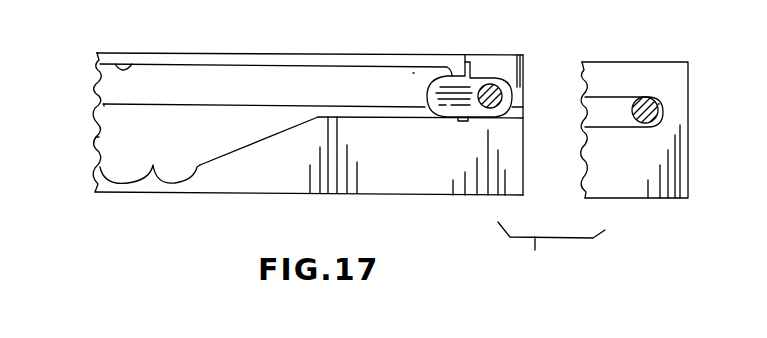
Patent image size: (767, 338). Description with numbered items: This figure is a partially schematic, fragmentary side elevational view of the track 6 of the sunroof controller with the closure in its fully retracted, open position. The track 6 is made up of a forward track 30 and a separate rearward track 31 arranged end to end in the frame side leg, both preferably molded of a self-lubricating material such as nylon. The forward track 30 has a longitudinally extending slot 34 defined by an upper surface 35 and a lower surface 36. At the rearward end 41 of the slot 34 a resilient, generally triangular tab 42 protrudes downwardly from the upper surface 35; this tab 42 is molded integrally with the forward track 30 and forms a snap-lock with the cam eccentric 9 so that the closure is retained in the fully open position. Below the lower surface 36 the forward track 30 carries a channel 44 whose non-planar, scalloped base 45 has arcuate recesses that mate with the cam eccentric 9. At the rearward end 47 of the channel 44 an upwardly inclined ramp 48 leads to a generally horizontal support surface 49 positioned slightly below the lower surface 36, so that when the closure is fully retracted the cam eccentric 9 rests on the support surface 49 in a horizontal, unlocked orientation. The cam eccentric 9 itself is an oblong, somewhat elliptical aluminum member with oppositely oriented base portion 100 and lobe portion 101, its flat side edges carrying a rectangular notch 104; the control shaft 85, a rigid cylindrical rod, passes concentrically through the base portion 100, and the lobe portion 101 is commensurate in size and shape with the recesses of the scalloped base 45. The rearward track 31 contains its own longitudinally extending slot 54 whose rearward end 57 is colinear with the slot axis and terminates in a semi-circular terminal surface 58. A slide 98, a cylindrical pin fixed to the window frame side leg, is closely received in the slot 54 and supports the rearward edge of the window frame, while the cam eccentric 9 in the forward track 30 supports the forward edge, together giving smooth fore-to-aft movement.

The track 6 is at (270, 54).
The cam eccentric 9 is at (425, 117).
The forward track 30 is at (93, 192).
The rearward track 31 is at (603, 200).
The track slot 34 is at (98, 82).
The upper surface 35 is at (131, 63).
The lower surface 36 is at (96, 97).
The rearward end 41 is at (413, 73).
The resilient tab 42 is at (480, 56).
The channel 44 is at (101, 138).
The scalloped base 45 is at (180, 183).
The rearward end 47 is at (205, 133).
The ramp 48 is at (260, 136).
The support surface 49 is at (352, 117).
The slot 54 is at (600, 98).
The rearward end 57 is at (596, 128).
The terminal surface 58 is at (662, 116).
The control shaft 85 is at (502, 98).
The slide 98 is at (648, 97).
The base portion 100 is at (510, 70).
The lobe portion 101 is at (425, 90).
The notch 104 is at (465, 120).